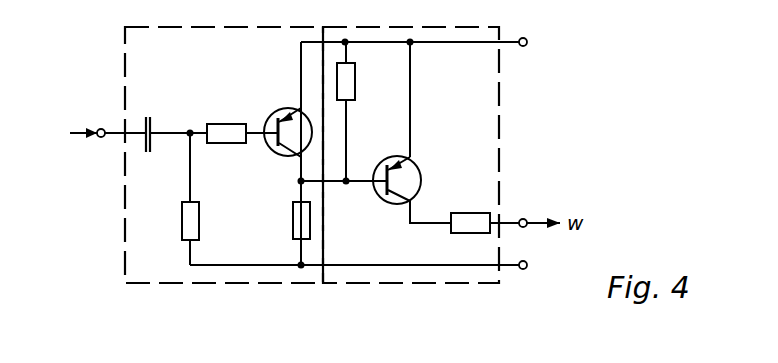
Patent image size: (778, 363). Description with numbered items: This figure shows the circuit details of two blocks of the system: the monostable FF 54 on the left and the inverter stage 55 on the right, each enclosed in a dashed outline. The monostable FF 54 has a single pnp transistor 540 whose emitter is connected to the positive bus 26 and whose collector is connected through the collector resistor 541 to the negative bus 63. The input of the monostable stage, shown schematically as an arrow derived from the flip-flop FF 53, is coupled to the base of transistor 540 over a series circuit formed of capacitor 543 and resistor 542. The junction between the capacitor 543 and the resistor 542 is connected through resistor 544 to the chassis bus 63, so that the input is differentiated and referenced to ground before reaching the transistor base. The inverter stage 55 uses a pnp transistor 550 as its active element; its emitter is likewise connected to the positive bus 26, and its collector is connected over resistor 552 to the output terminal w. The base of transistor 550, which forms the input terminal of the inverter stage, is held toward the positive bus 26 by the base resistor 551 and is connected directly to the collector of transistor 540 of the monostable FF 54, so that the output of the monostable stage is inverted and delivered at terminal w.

The flip-flop 53 is at (65, 133).
The positive bus 26 is at (536, 43).
The negative bus 63 is at (534, 267).
The monostable FF 54 is at (227, 285).
The inverter stage 55 is at (393, 285).
The pnp transistor 540 is at (285, 157).
The collector resistor 541 is at (296, 222).
The resistor 542 is at (231, 138).
The capacitor 543 is at (151, 125).
The resistor 544 is at (184, 222).
The pnp transistor 550 is at (412, 173).
The base resistor 551 is at (352, 83).
The resistor 552 is at (467, 220).